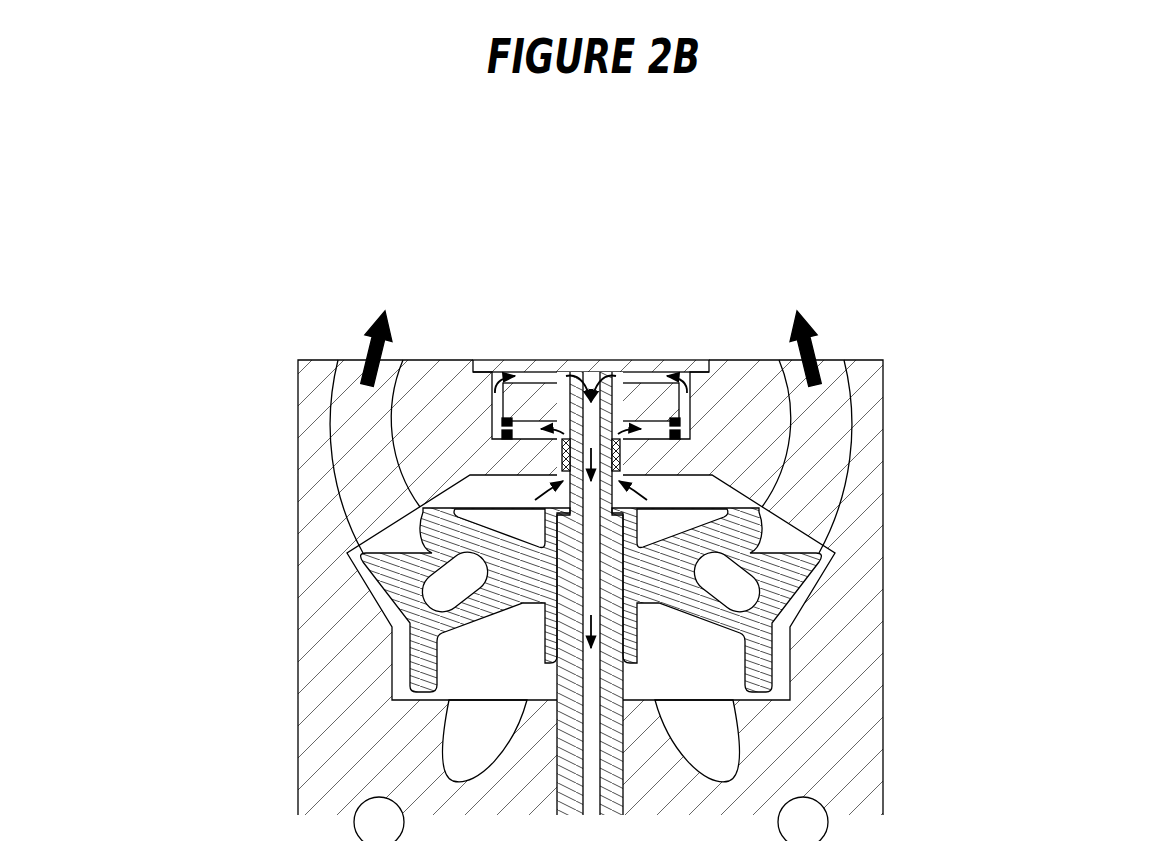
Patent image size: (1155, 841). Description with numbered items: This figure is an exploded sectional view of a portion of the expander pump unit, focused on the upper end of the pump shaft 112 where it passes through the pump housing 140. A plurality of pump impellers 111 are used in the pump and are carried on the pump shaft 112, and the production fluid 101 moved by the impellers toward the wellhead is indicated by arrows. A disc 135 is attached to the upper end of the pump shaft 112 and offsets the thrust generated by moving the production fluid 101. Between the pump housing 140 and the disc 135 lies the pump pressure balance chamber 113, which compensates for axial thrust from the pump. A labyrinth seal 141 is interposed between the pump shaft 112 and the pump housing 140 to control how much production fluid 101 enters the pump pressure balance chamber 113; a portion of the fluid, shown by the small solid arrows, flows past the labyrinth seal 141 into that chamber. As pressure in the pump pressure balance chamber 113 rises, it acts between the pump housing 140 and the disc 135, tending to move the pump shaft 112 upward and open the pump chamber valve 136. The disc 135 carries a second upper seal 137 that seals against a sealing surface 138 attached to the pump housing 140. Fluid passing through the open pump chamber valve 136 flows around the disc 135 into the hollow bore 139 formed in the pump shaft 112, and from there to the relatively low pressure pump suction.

The production fluid 101 is at (589, 460).
The pump impeller 111 is at (768, 595).
The pump shaft 112 is at (613, 579).
The pump pressure balance chamber 113 is at (545, 420).
The disc 135 is at (650, 400).
The pump chamber valve 136 is at (476, 402).
The second upper seal 137 is at (498, 422).
The sealing surface 138 is at (498, 434).
The hollow bore 139 is at (592, 512).
The pump housing 140 is at (707, 441).
The labyrinth seal 141 is at (561, 452).